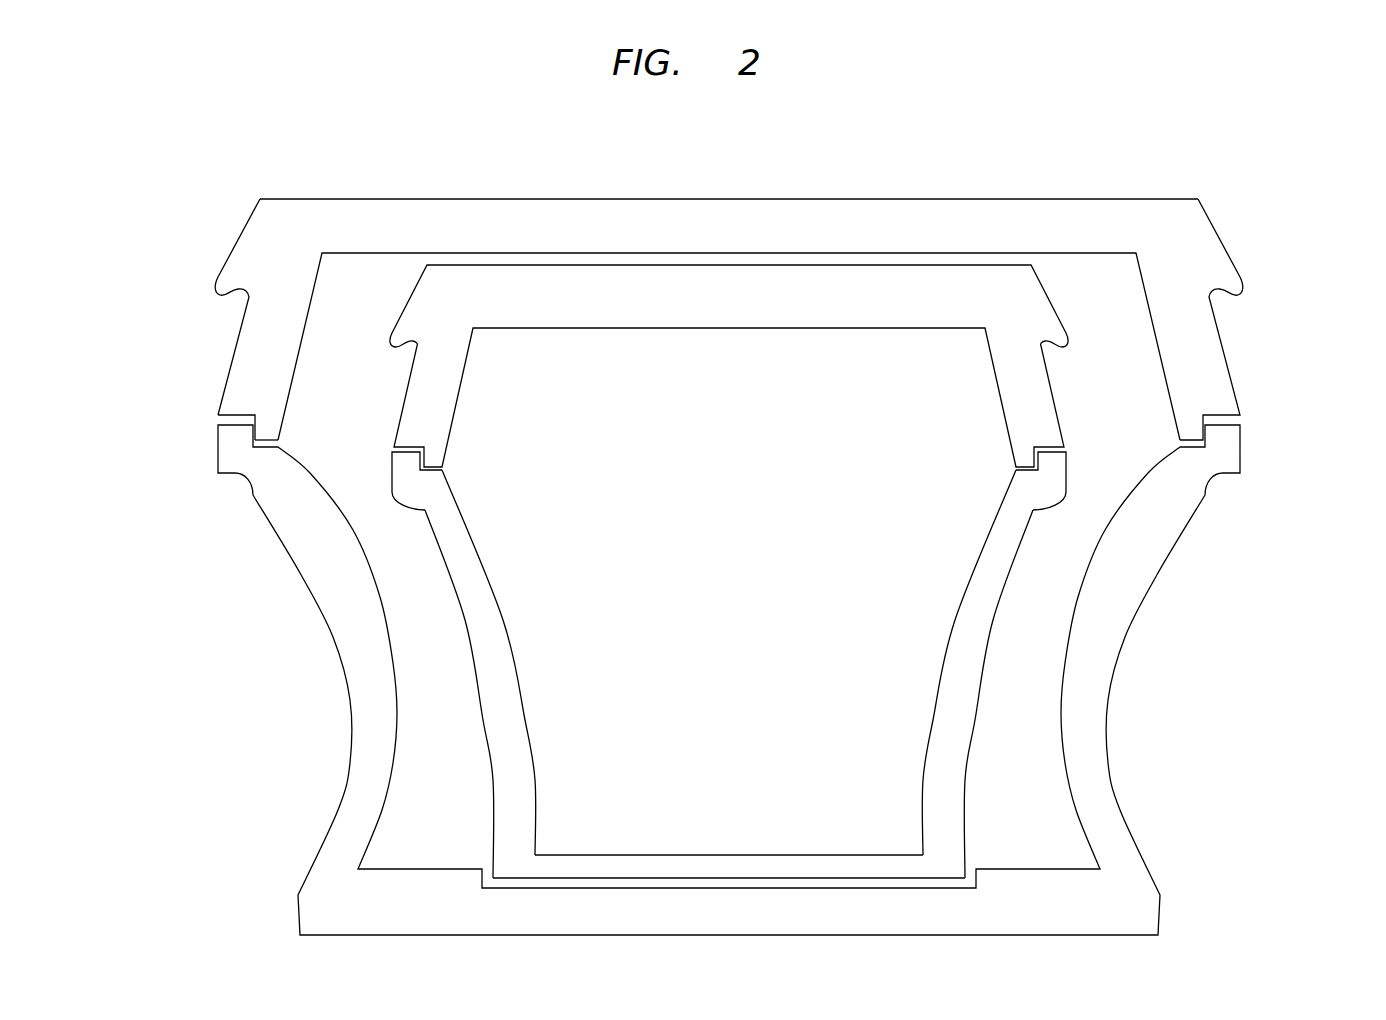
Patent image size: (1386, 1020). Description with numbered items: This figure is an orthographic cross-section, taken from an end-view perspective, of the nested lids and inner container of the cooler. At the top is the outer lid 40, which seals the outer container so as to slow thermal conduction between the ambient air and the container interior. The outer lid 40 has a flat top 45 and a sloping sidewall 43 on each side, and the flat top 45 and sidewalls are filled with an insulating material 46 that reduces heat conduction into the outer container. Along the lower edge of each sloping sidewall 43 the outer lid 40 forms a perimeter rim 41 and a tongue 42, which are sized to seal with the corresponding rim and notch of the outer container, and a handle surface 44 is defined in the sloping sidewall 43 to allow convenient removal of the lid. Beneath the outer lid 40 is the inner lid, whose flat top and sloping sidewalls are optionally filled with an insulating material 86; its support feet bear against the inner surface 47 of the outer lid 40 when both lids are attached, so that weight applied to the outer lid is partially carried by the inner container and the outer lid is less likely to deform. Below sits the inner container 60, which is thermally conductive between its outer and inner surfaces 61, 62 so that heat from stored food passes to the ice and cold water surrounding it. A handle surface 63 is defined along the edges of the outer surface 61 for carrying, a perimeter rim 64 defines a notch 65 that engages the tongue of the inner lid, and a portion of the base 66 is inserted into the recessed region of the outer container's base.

The outer lid 40 is at (516, 166).
The perimeter rim 41 is at (238, 410).
The tongue 42 is at (268, 432).
The sloping sidewall 43 is at (230, 356).
The handle surface 44 is at (1237, 293).
The flat top 45 is at (860, 196).
The insulating material 46 is at (800, 228).
The inner surface 47 is at (617, 253).
The insulating material 86 is at (747, 293).
The inner container 60 is at (549, 683).
The outer surface 61 is at (461, 632).
The inner surface 62 is at (505, 613).
The handle surface 63 is at (403, 500).
The perimeter rim 64 is at (1018, 474).
The notch 65 is at (1028, 470).
The base 66 is at (688, 850).